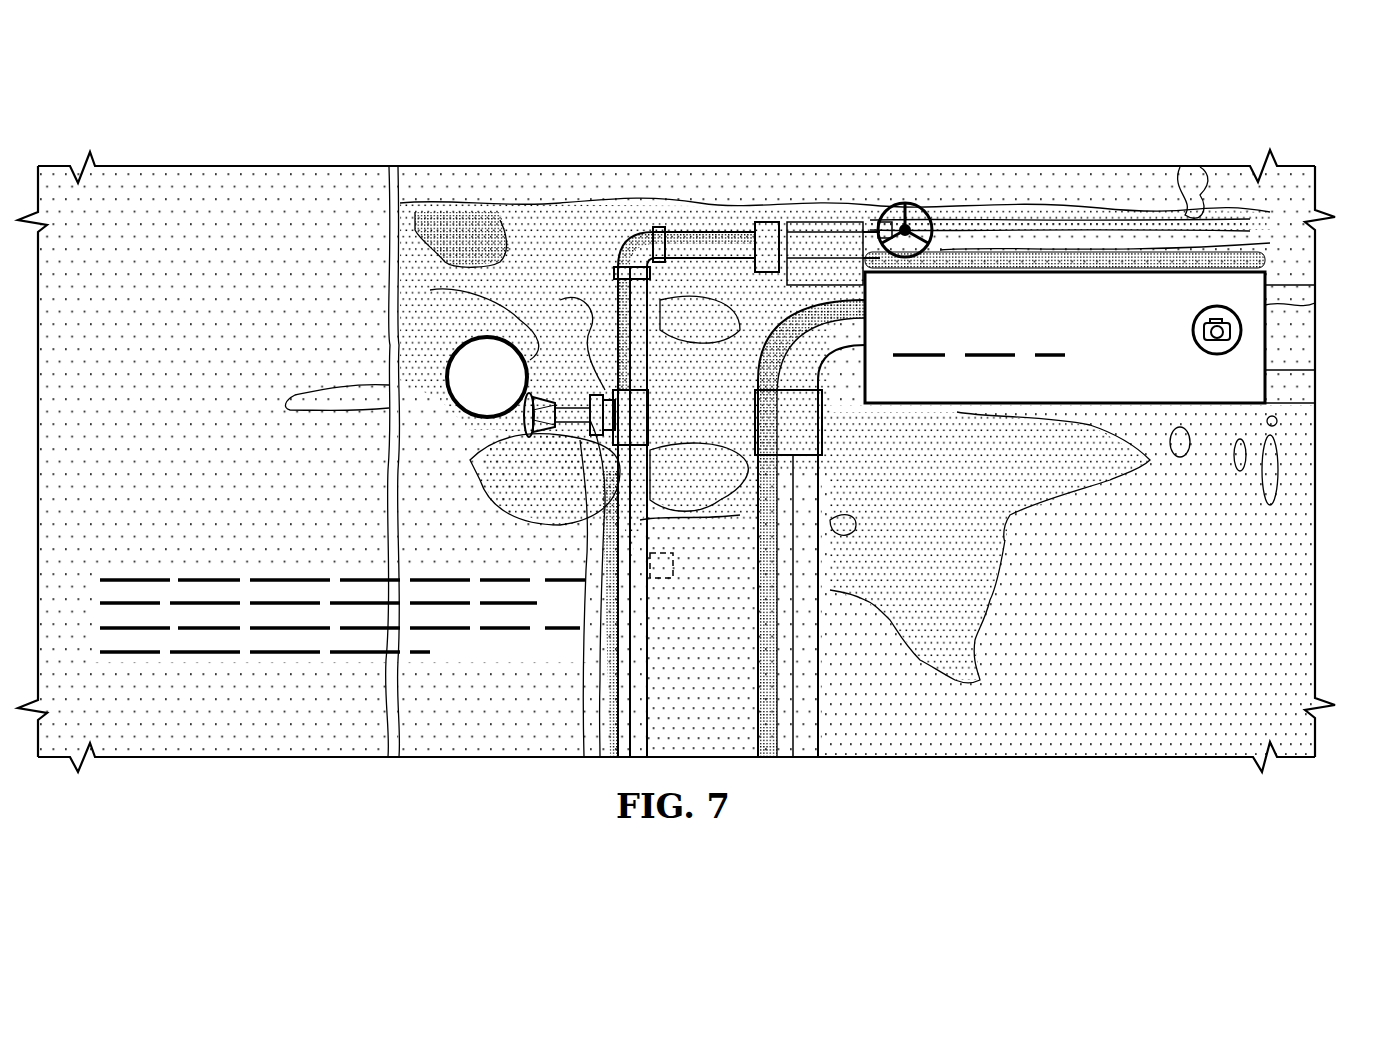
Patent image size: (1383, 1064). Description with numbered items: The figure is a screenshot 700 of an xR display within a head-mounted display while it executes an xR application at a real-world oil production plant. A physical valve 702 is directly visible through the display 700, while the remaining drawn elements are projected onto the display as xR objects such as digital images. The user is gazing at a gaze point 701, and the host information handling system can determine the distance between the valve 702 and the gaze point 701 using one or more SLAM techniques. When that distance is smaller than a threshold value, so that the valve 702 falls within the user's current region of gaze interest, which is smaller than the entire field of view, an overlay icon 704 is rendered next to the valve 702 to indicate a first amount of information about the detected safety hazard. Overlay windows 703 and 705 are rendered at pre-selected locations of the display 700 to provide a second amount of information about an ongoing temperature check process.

The screenshot 700 is at (328, 118).
The gaze point 701 is at (671, 578).
The valve 702 is at (597, 384).
The overlay window 703 is at (1274, 394).
The overlay icon 704 is at (480, 336).
The overlay window 705 is at (194, 682).